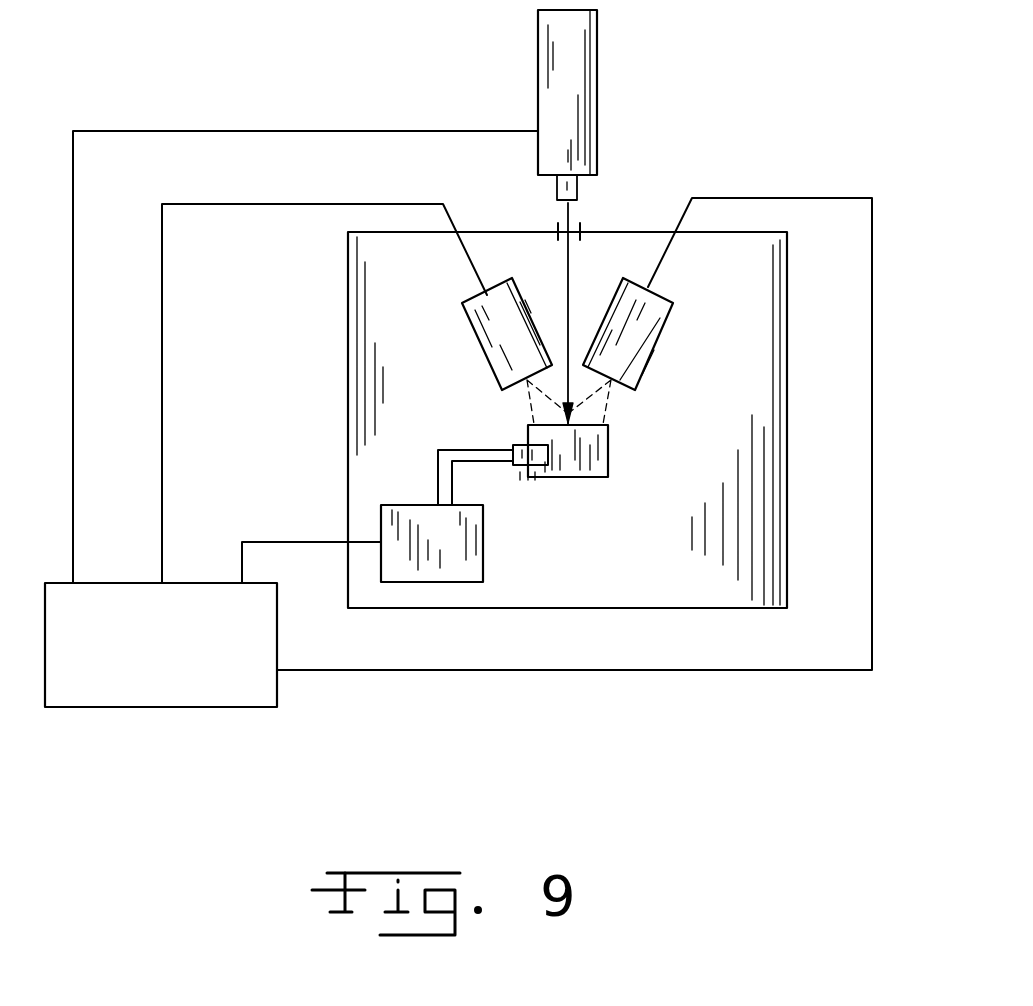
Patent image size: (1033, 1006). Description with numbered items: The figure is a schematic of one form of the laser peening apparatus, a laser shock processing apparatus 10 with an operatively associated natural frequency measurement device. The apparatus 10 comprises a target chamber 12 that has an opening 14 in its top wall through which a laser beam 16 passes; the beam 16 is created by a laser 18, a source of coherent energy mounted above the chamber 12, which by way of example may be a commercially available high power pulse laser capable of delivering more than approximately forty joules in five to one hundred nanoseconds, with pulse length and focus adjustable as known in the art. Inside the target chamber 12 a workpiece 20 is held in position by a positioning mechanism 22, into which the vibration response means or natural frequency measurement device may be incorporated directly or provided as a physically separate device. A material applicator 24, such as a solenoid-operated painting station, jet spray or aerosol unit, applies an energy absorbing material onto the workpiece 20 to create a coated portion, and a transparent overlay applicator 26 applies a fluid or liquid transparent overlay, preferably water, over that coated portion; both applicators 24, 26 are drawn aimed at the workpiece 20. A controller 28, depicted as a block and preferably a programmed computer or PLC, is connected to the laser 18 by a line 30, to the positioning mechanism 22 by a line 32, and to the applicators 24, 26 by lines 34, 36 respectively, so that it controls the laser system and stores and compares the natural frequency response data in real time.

The laser shock processing apparatus 10 is at (885, 138).
The target chamber 12 is at (787, 398).
The opening 14 is at (575, 222).
The laser beam 16 is at (565, 265).
The laser 18 is at (588, 70).
The workpiece 20 is at (610, 448).
The positioning mechanism 22 is at (483, 548).
The material applicator 24 is at (492, 340).
The transparent overlay applicator 26 is at (660, 342).
The controller 28 is at (163, 692).
The laser control line 30 is at (375, 131).
The supply control line 32 is at (300, 542).
The first camera signal line 34 is at (295, 204).
The second camera signal line 36 is at (768, 198).